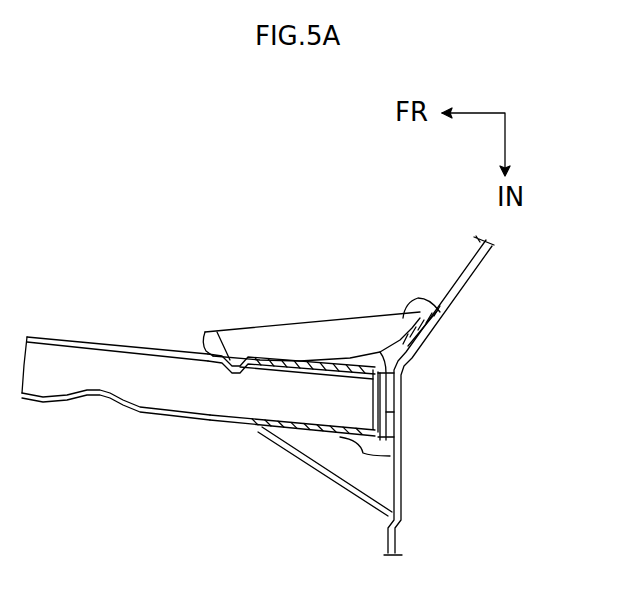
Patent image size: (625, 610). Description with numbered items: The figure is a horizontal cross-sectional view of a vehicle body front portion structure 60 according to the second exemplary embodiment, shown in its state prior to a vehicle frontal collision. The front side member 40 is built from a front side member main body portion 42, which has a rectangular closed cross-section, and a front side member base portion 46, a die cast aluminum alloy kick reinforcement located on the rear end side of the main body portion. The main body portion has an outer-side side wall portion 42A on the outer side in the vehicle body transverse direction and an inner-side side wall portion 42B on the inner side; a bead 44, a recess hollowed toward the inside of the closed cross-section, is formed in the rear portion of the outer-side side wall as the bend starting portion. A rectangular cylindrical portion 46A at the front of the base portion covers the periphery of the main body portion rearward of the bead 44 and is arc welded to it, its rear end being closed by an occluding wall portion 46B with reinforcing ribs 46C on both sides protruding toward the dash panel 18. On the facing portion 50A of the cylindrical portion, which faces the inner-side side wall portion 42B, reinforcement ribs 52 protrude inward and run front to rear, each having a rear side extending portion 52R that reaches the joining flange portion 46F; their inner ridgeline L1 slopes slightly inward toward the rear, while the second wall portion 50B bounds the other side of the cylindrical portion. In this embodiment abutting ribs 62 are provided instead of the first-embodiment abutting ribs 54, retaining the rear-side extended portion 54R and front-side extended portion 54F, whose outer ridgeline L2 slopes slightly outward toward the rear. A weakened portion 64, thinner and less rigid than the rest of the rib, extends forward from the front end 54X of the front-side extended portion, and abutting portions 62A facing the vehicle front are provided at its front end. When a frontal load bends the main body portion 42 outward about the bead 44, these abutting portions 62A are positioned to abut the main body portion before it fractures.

The dash panel 18 is at (465, 272).
The front side member 40 is at (116, 251).
The front side member main body portion 42 is at (80, 323).
The outer-side side wall portion 42A is at (143, 349).
The inner-side side wall portion 42B is at (172, 414).
The bead 44 is at (249, 352).
The front side member base portion 46 is at (383, 276).
The rectangular cylindrical portion 46A is at (324, 356).
The occluding wall portion 46B is at (406, 410).
The reinforcing ribs 46C is at (405, 373).
The joining flange portion 46F is at (442, 298).
The facing portion 50A is at (297, 413).
The rear wall of closed cross section 50B is at (310, 363).
The reinforcement rib 52 is at (340, 480).
The rear side extending portion 52R is at (375, 504).
The abutting ribs 54 is at (312, 291).
The front-side extended portion 54F is at (252, 330).
The rear-side extended portion 54R is at (403, 316).
The front end 54X is at (205, 331).
The vehicle body front portion structure 60 is at (237, 181).
The abutting ribs 62 is at (323, 314).
The abutting portions 62A is at (202, 342).
The weakened portion 64 is at (232, 358).
The ridgeline L1 is at (315, 465).
The ridgeline L2 is at (295, 322).